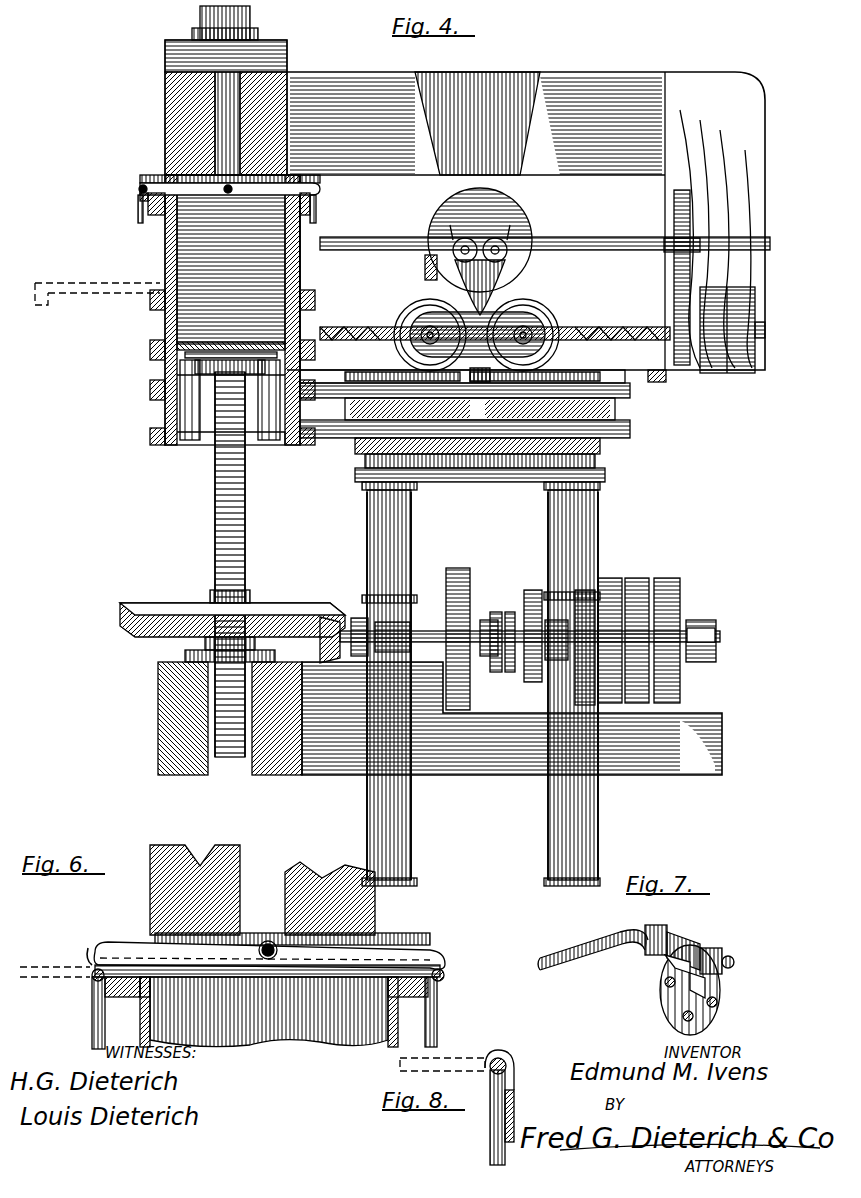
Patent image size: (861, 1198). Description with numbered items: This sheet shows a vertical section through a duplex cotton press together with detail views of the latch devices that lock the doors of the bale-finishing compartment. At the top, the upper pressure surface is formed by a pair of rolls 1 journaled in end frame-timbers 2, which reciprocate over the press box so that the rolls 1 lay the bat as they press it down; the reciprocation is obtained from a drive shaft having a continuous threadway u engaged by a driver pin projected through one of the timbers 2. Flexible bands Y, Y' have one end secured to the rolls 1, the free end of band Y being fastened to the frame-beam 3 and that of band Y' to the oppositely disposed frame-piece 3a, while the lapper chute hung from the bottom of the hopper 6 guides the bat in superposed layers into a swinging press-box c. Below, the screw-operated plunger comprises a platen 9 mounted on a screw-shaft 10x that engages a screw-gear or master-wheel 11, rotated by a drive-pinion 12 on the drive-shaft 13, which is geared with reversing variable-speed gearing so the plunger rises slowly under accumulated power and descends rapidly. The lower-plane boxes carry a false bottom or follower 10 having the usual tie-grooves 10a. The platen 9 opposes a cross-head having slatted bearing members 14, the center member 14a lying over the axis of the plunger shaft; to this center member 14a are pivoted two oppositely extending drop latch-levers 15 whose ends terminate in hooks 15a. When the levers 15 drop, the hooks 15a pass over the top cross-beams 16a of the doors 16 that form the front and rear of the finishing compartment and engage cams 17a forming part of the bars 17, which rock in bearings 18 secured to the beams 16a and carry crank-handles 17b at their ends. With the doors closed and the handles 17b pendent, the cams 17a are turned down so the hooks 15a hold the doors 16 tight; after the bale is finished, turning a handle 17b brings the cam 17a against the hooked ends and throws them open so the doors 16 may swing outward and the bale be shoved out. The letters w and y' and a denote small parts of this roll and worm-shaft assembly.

In FIG. 4, the roll 1 is at (404, 313).
In FIG. 4, the end frame-timber 2 is at (512, 320).
In FIG. 4, the frame-beam 3 is at (322, 272).
In FIG. 4, the frame-piece 3a is at (660, 375).
In FIG. 4, the hopper 6 is at (477, 123).
In FIG. 4, the platen 9 is at (231, 400).
In FIG. 4, the false bottom or follower 10 is at (222, 340).
In FIG. 4, the tie-grooves 10a is at (250, 342).
In FIG. 4, the screw-shaft 10x is at (245, 530).
In FIG. 4, the screw-gear or master-wheel 11 is at (278, 612).
In FIG. 4, the drive-pinion 12 is at (320, 638).
In FIG. 4, the drive-shaft 13 is at (395, 652).
In FIG. 4, the slatted bearing member 14 is at (152, 175).
In FIG. 6, the center member 14a is at (400, 935).
In FIG. 4, the drop latch-lever 15 is at (224, 192).
In FIG. 6, the drop latch-lever 15 is at (269, 955).
In FIG. 4, the hook 15a is at (137, 188).
In FIG. 6, the hook 15a is at (85, 950).
In FIG. 4, the door 16 is at (168, 236).
In FIG. 6, the door 16 is at (386, 1016).
In FIG. 4, the top cross-beam 16a is at (138, 206).
In FIG. 6, the top cross-beam 16a is at (150, 985).
In FIG. 7, the bar 17 is at (640, 938).
In FIG. 8, the bar 17 is at (508, 1060).
In FIG. 4, the cam 17a is at (138, 195).
In FIG. 6, the cam 17a is at (92, 977).
In FIG. 7, the cam 17a is at (665, 965).
In FIG. 8, the cam 17a is at (512, 1068).
In FIG. 4, the crank-handle 17b is at (139, 217).
In FIG. 6, the crank-handle 17b is at (98, 1018).
In FIG. 7, the crank-handle 17b is at (575, 945).
In FIG. 8, the crank-handle 17b is at (492, 1118).
In FIG. 6, the bearing 18 is at (108, 992).
In FIG. 7, the bearing 18 is at (678, 945).
In FIG. 8, the bearing 18 is at (508, 1052).
In FIG. 4, the belt a is at (477, 334).
In FIG. 4, the press-box c is at (162, 333).
In FIG. 4, the threadway u is at (495, 320).
In FIG. 4, the worm w is at (606, 331).
In FIG. 4, the flexible band y' is at (554, 299).
In FIG. 4, the flexible band Y is at (357, 351).
In FIG. 4, the flexible band Y' is at (635, 385).